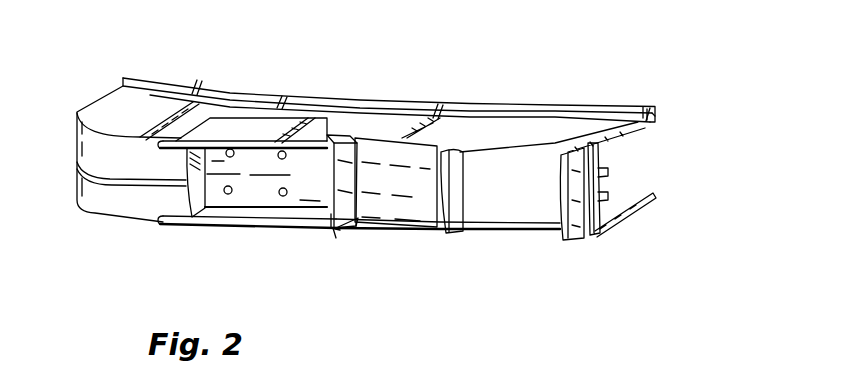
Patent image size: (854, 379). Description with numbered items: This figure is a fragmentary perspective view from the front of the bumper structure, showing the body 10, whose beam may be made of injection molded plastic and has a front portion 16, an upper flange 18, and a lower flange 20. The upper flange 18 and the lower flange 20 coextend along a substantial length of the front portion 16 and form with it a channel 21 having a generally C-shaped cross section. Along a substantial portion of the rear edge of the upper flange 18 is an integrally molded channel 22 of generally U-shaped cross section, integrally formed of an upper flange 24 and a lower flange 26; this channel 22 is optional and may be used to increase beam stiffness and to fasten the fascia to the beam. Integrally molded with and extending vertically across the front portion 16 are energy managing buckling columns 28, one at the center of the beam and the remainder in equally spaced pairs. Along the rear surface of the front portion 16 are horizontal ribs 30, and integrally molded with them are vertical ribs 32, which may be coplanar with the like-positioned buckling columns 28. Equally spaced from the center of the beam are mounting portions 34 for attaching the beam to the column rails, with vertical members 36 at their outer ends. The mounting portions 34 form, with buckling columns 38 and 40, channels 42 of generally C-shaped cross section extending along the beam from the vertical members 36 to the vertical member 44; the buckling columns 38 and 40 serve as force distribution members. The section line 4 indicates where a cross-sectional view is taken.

The section line 4- 4 is at (257, 41).
The body 10 is at (284, 78).
The front portion 16 is at (414, 205).
The upper flange 18 is at (568, 133).
The lower flange 20 is at (628, 200).
The channel 21 is at (672, 180).
The integrally molded channel 22 is at (600, 93).
The upper flange of channel 24 is at (643, 107).
The lower flange of channel 26 is at (656, 111).
The energy managing buckling columns 28 is at (560, 222).
The horizontal ribs 30 is at (608, 183).
The vertical ribs 32 is at (608, 157).
The mounting portions 34 is at (250, 190).
The vertical members 36 is at (190, 182).
The buckling column 38 is at (334, 216).
The buckling column 40 is at (228, 218).
The channels 42 is at (334, 244).
The vertical member 44 is at (347, 228).